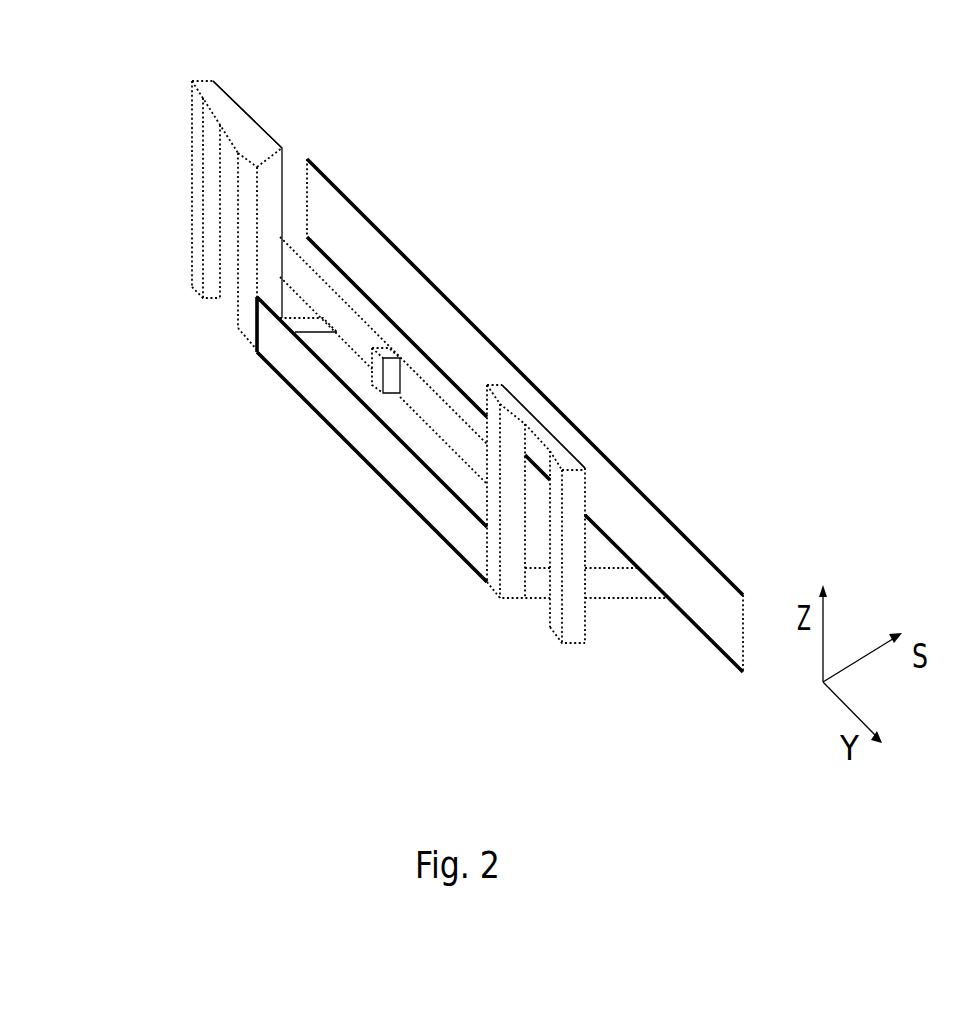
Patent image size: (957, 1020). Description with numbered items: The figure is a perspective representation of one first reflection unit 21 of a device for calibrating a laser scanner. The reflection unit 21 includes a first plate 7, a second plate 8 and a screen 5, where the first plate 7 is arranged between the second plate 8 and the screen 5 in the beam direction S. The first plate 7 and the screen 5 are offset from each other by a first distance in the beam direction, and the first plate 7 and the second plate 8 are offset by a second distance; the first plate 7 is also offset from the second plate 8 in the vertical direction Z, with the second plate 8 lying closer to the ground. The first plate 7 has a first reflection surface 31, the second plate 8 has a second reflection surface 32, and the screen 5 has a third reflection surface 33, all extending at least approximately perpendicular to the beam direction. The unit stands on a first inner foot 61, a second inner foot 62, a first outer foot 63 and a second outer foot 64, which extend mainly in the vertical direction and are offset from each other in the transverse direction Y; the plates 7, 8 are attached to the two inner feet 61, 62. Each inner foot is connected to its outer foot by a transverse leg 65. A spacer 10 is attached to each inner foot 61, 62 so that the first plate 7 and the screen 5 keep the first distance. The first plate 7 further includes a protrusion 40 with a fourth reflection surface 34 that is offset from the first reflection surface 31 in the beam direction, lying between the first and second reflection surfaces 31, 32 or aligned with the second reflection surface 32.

The screen 5 is at (578, 415).
The third reflection surface 33 is at (682, 562).
The first plate 7 is at (383, 298).
The first reflection surface 31 is at (293, 270).
The second plate 8 is at (352, 439).
The second reflection surface 32 is at (338, 407).
The spacer 10 is at (312, 325).
The first reflection unit 21 is at (768, 217).
The protrusion 40 is at (476, 294).
The fourth reflection surface 34 is at (385, 353).
The first inner foot 61 is at (182, 252).
The second inner foot 62 is at (497, 557).
The first outer foot 63 is at (198, 191).
The second outer foot 64 is at (557, 627).
The transverse leg 65 is at (252, 132).